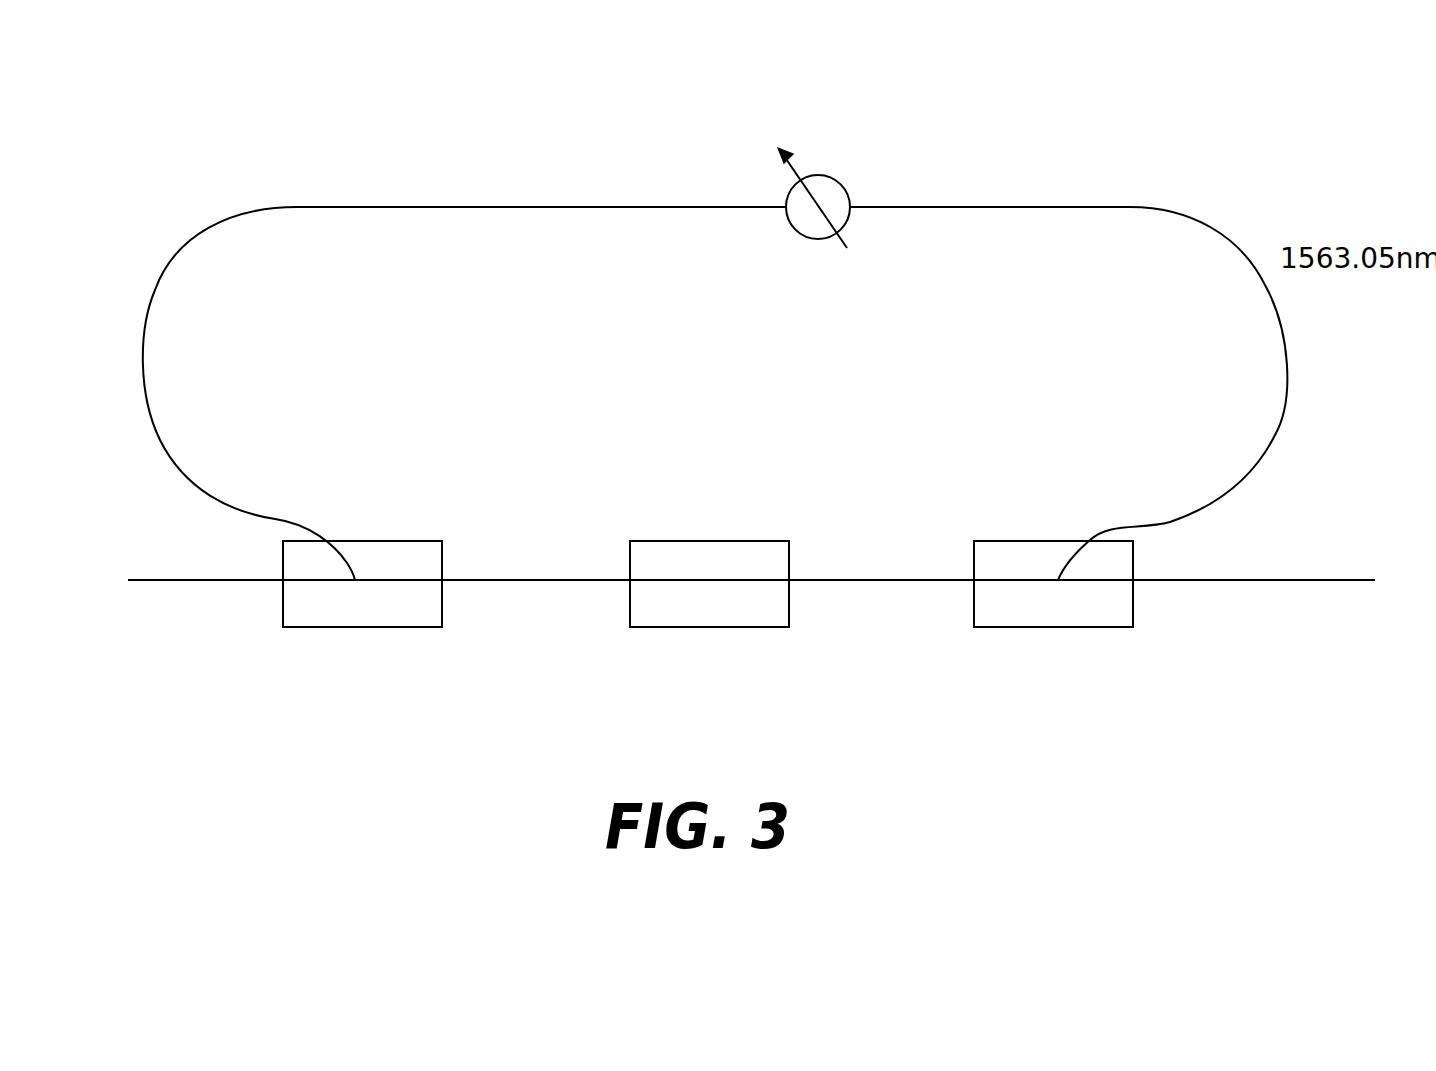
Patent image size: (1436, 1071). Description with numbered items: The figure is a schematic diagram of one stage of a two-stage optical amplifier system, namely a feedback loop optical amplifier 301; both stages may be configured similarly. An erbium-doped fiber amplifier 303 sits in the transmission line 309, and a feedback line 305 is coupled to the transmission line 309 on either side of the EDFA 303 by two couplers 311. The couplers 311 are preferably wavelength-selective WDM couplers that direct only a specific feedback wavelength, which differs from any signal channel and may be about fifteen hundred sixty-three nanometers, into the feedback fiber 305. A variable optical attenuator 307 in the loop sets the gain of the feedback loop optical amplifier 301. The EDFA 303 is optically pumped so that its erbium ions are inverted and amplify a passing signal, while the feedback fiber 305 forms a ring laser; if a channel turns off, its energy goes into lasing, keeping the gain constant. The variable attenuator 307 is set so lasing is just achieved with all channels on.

The feedback loop optical amplifier 301 is at (1102, 148).
The erbium-doped fiber amplifier (EDFA) 303 is at (715, 622).
The feedback line 305 is at (383, 208).
The variable optical attenuator 307 is at (847, 220).
The transmission line 309 is at (193, 581).
The couplers 311 is at (370, 618).